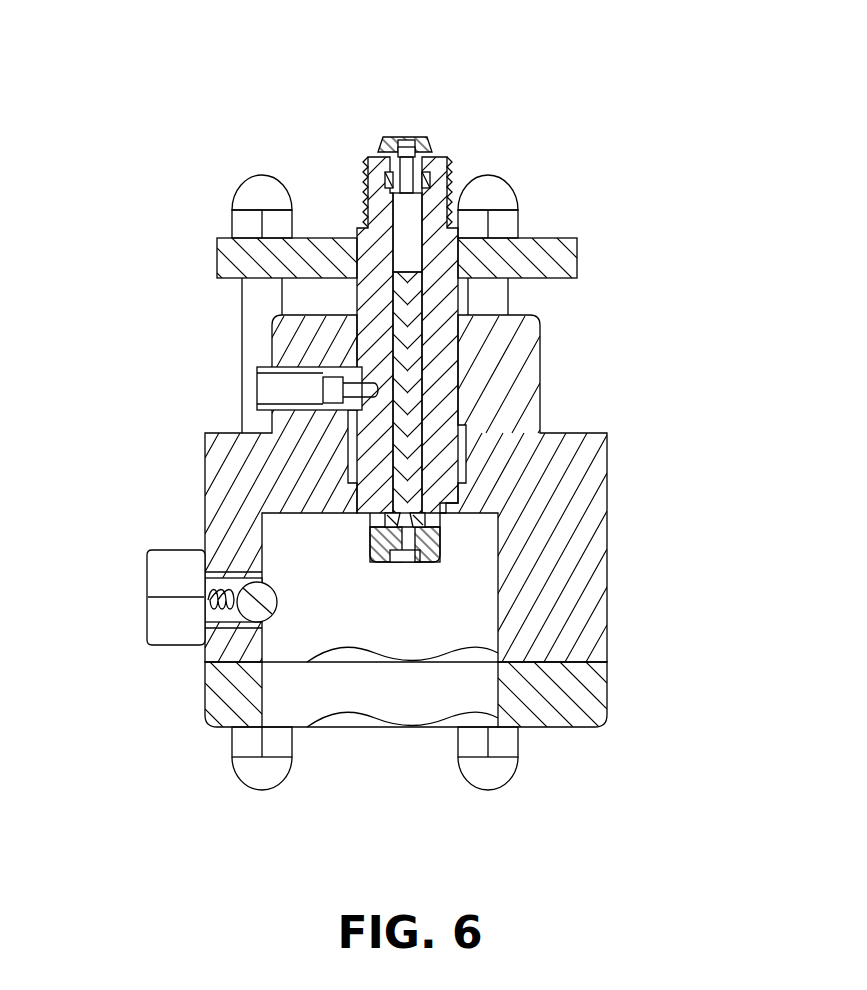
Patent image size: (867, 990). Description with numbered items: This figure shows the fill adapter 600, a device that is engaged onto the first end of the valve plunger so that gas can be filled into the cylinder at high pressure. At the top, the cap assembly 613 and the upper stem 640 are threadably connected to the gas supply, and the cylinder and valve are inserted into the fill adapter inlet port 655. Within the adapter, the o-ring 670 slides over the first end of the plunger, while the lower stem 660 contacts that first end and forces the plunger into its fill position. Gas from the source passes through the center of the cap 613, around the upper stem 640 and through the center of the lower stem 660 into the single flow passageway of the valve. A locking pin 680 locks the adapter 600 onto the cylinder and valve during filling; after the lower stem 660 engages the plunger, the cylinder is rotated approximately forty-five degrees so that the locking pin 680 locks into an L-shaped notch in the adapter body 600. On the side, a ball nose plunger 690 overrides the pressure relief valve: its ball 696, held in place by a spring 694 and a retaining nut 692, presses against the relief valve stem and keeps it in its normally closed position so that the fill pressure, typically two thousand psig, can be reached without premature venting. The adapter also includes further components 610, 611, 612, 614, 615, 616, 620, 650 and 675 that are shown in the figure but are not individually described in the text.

The fill adapter 600 is at (592, 729).
The flange 610 is at (422, 268).
The seal 611 is at (430, 174).
The cap 612 is at (436, 147).
The cap assembly 613 is at (434, 136).
The lower seal 614 is at (441, 537).
The seal ring 615 is at (392, 516).
The seal ring 616 is at (425, 515).
The body 620 is at (458, 460).
The upper stem 640 is at (389, 192).
The seal retainer 650 is at (441, 554).
The fill adapter inlet port 655 is at (392, 622).
The lower stem 660 is at (424, 378).
The o-ring 670 is at (436, 561).
The pin 675 is at (322, 392).
The locking pin 680 is at (324, 389).
The ball nose plunger 690 is at (155, 645).
The retaining nut 692 is at (148, 570).
The spring 694 is at (207, 607).
The ball 696 is at (257, 602).